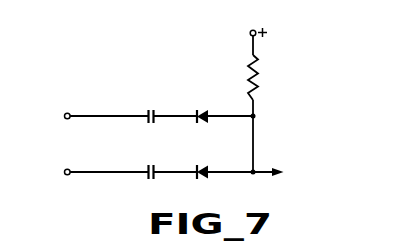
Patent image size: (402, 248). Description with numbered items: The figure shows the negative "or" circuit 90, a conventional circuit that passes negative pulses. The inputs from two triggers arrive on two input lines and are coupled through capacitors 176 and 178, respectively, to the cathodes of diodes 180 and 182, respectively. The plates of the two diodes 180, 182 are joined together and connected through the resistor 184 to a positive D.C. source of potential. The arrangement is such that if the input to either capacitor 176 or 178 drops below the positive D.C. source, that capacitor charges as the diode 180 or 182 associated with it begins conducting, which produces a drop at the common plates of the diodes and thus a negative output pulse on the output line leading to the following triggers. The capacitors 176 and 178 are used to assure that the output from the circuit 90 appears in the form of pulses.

The negative "or" circuit 90 is at (232, 97).
The capacitor 176 is at (148, 109).
The capacitor 178 is at (148, 165).
The diode 180 is at (201, 109).
The diode 182 is at (201, 165).
The resistor 184 is at (256, 83).